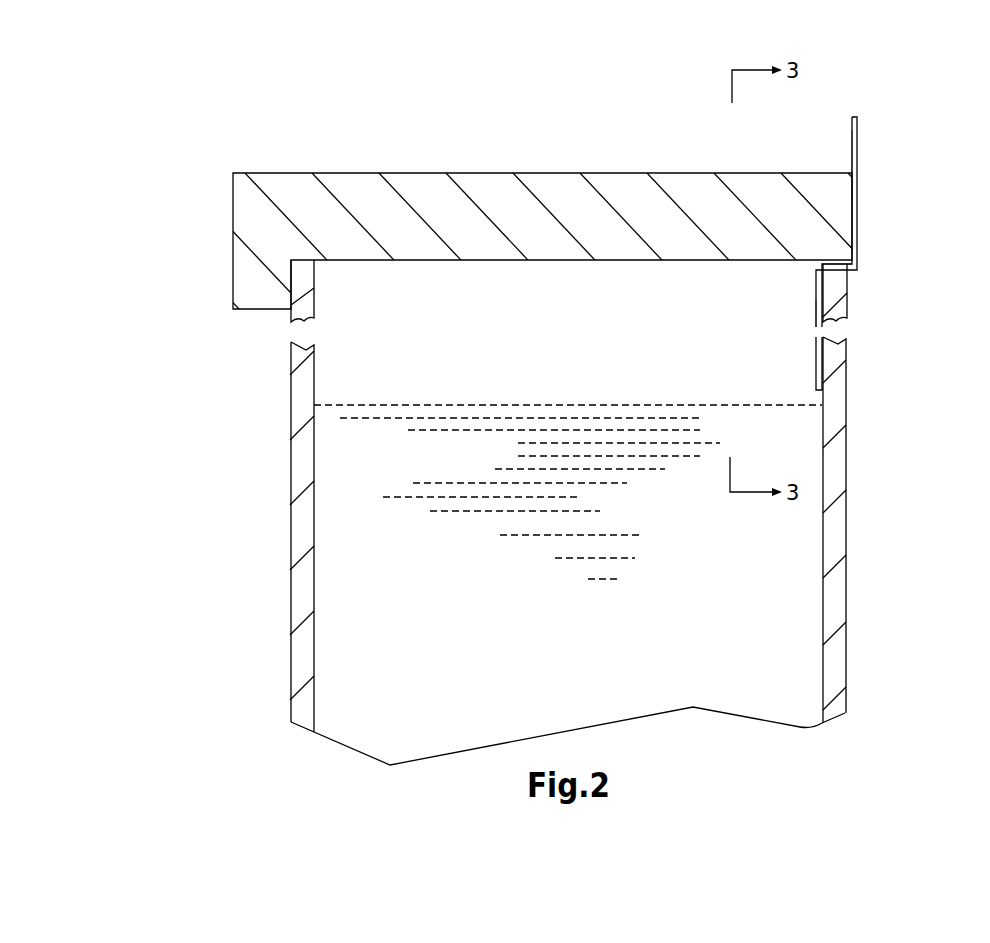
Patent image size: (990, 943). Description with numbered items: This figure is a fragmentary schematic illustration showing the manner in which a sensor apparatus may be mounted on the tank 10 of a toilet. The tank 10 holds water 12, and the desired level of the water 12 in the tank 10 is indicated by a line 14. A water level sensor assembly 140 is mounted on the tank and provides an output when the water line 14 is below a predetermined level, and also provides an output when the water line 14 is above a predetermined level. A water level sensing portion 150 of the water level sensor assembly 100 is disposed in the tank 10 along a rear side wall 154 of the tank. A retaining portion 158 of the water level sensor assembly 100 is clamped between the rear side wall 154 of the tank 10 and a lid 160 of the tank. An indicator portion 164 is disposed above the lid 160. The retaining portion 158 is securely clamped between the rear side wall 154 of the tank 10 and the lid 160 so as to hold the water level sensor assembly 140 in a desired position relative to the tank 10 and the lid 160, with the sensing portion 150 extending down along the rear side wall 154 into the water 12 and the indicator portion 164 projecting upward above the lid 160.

The tank 10 is at (284, 617).
The water 12 is at (530, 500).
The line 14 is at (363, 405).
The water level sensor assembly 100 is at (844, 218).
The water level sensor assembly 140 is at (861, 102).
The water level sensing portion 150 is at (817, 375).
The rear side wall 154 is at (835, 478).
The retaining portion 158 is at (840, 260).
The lid 160 is at (515, 207).
The indicator portion 164 is at (850, 147).